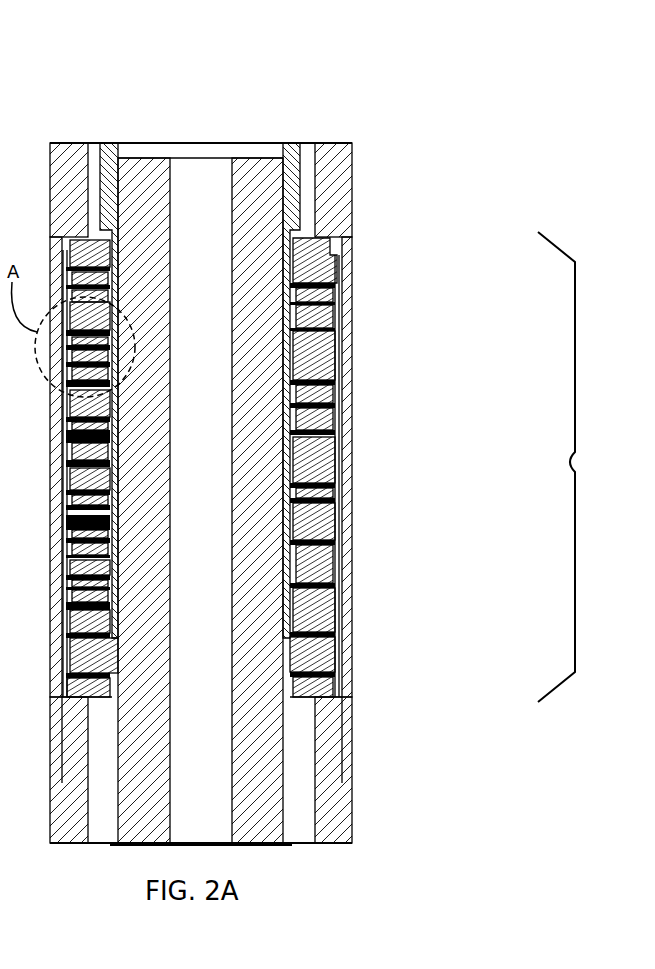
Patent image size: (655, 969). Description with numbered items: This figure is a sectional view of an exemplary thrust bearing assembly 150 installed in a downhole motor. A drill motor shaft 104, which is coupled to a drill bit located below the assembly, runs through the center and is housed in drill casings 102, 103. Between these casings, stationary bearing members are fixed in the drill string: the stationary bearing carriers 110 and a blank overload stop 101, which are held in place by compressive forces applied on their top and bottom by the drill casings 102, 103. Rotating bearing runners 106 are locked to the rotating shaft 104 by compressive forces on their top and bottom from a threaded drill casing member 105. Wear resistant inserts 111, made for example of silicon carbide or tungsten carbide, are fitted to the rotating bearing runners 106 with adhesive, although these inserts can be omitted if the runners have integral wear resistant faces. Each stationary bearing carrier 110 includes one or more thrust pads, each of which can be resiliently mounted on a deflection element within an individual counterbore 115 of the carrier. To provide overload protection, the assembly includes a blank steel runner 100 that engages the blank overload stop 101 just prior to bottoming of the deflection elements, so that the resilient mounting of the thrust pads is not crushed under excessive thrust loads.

The blank steel runner 100 is at (312, 645).
The blank overload stop 101 is at (317, 685).
The drill casing 102 is at (330, 186).
The drill casing 103 is at (327, 808).
The drill motor shaft 104 is at (258, 228).
The threaded drill casing member 105 is at (291, 172).
The rotating bearing runner 106 is at (320, 308).
The stationary bearing carrier 110 is at (317, 253).
The wear resistant insert 111 is at (323, 327).
The counterbore 115 is at (0, 388).
The thrust bearing assembly 150 is at (577, 467).